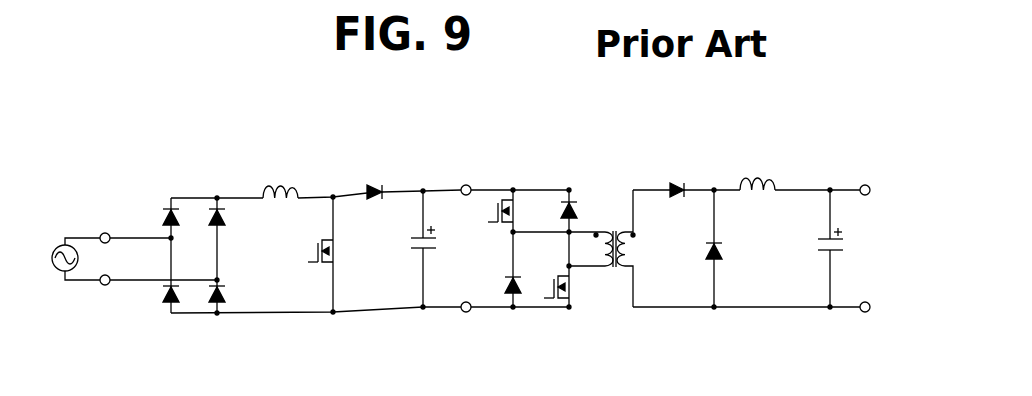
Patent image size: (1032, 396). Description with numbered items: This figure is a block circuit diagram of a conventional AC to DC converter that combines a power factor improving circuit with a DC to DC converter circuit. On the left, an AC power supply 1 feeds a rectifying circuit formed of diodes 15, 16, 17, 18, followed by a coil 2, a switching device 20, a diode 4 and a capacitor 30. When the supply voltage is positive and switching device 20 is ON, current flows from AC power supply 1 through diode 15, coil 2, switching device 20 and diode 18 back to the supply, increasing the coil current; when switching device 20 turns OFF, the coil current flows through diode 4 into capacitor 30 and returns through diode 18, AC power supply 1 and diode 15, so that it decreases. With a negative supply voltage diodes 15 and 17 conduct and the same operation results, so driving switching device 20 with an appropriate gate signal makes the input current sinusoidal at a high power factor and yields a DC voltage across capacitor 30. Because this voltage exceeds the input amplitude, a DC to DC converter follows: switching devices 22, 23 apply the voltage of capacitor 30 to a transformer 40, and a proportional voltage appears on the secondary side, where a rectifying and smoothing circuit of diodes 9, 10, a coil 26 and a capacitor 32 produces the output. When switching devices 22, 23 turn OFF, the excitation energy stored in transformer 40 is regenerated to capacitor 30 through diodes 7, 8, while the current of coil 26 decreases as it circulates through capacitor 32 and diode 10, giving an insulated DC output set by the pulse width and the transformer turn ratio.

The AC power supply 1 is at (43, 256).
The diode 15 is at (157, 217).
The diode 16 is at (204, 216).
The diode 17 is at (160, 290).
The diode 18 is at (206, 290).
The coil 2 is at (281, 184).
The switching device 20 is at (340, 247).
The diode 4 is at (376, 184).
The capacitor 30 is at (442, 243).
The switching device 22 is at (493, 208).
The diode 7 is at (554, 209).
The diode 8 is at (523, 286).
The switching device 23 is at (575, 286).
The transformer 40 is at (603, 218).
The diode 9 is at (680, 183).
The diode 10 is at (724, 249).
The coil 26 is at (758, 177).
The capacitor 32 is at (848, 244).